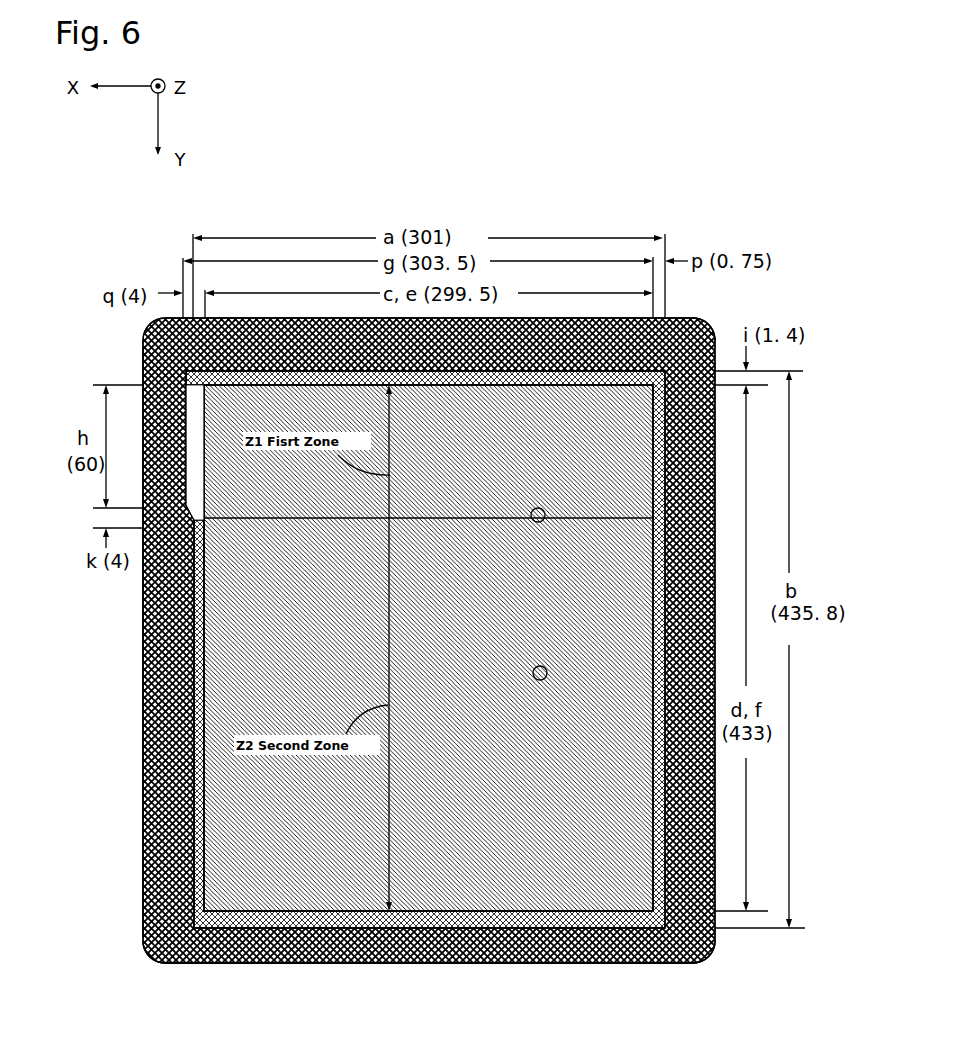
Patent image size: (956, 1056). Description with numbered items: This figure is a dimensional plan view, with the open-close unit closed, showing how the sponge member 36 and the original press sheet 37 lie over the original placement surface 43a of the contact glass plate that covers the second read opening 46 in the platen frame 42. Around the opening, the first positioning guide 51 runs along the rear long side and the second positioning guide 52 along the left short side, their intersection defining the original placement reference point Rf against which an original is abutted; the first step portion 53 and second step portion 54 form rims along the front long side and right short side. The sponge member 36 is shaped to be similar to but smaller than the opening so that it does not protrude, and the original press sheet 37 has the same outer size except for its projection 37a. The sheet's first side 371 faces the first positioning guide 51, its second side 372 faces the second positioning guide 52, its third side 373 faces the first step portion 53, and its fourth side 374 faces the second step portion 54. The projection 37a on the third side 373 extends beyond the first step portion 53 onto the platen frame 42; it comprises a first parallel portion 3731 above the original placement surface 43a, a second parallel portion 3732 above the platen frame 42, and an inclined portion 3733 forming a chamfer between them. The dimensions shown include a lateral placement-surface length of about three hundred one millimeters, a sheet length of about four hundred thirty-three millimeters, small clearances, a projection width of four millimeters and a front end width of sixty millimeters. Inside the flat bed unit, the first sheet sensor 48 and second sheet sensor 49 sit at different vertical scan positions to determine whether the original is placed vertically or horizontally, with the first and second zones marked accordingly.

The sponge member 36 is at (136, 695).
The original press sheet 37 is at (135, 765).
The projection 37a is at (135, 500).
The platen frame 42 is at (135, 822).
The original placement surface 43a is at (135, 622).
The second read opening 46 is at (587, 932).
The first sheet sensor 48 is at (523, 516).
The second sheet sensor 49 is at (528, 672).
The first positioning guide 51 is at (707, 937).
The second positioning guide 52 is at (648, 363).
The first step portion 53 is at (185, 882).
The second step portion 54 is at (312, 915).
The first side 371 is at (660, 850).
The second side 372 is at (270, 377).
The third side 373 is at (135, 732).
The fourth side 374 is at (380, 905).
The first parallel portion 3731 is at (135, 660).
The second parallel portion 3732 is at (140, 393).
The inclined portion 3733 is at (187, 512).
The original placement reference point Rf is at (712, 325).